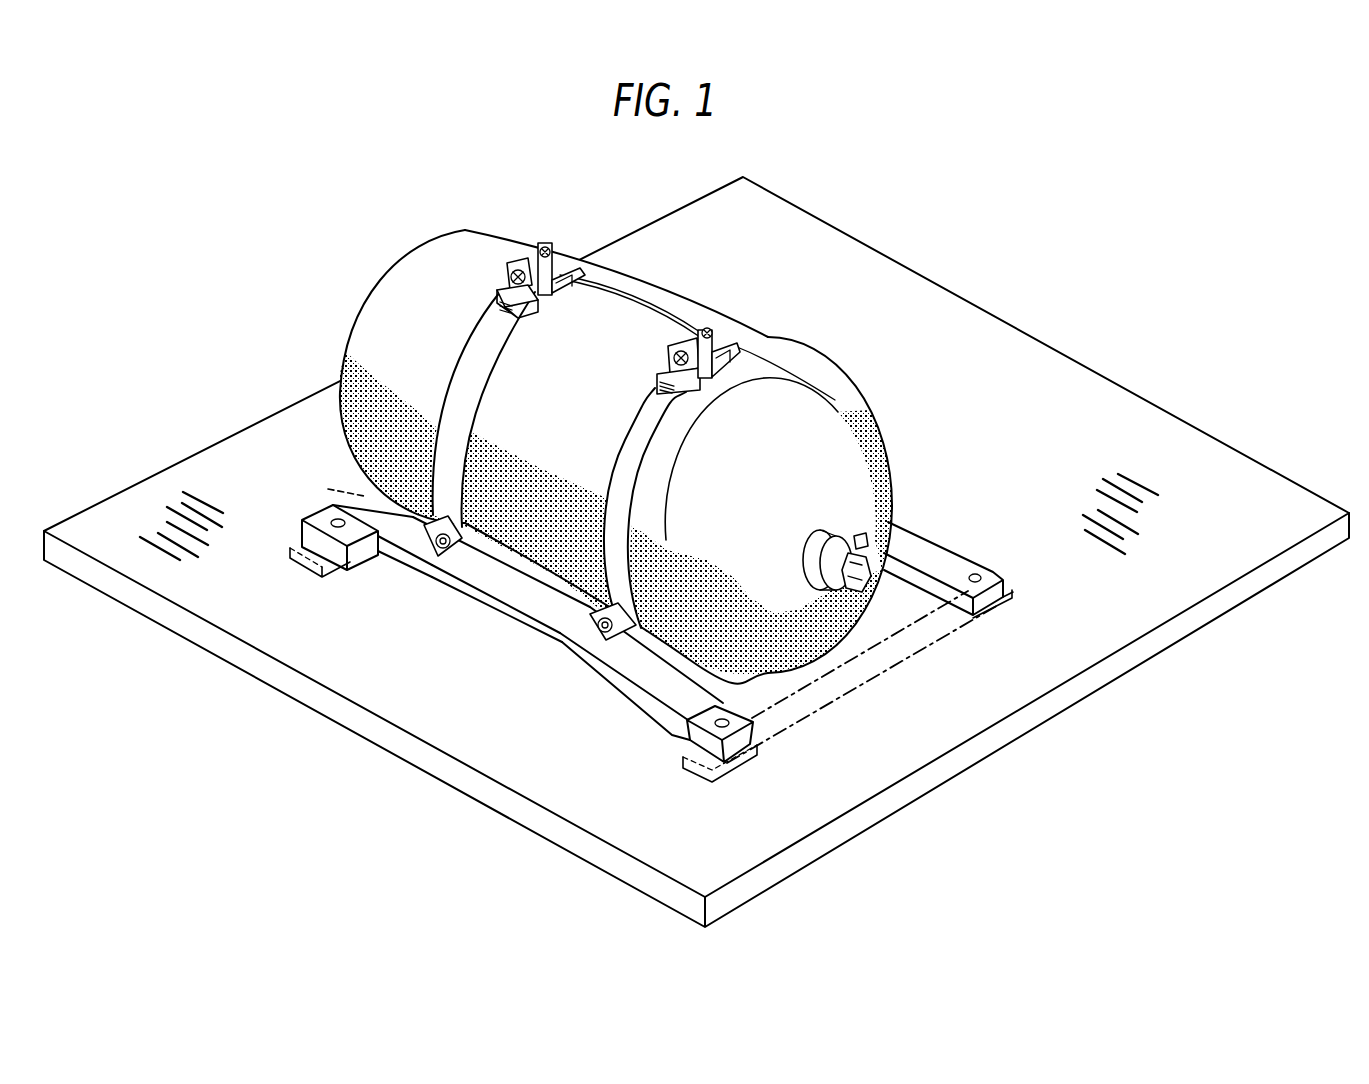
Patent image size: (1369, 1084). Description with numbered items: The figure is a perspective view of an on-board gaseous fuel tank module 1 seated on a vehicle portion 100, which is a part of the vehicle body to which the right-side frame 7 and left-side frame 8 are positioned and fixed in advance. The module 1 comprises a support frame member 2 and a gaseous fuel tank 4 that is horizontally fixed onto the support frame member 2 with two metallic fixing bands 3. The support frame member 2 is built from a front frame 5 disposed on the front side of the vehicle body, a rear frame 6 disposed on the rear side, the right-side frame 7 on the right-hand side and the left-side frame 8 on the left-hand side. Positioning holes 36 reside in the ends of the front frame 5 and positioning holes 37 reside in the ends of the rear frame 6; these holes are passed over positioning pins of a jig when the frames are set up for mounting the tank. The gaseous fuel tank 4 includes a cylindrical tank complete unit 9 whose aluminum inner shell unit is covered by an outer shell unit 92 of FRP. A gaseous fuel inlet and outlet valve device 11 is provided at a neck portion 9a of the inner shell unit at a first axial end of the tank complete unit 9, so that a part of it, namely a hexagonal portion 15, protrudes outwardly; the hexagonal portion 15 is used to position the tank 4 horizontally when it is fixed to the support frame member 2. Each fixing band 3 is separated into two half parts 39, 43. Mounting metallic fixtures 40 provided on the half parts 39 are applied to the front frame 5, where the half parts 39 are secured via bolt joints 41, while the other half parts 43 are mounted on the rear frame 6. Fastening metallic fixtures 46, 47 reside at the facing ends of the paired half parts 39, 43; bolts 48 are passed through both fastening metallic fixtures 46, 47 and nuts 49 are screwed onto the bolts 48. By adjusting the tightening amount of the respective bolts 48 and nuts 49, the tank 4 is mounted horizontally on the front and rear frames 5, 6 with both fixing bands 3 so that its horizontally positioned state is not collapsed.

The vehicle portion 100 is at (1168, 440).
The on-board gaseous fuel tank module 1 is at (898, 389).
The support frame member 2 is at (962, 545).
The metallic fixing band 3 is at (611, 263).
The gaseous fuel tank 4 is at (673, 300).
The front frame 5 is at (487, 621).
The rear frame 6 is at (918, 528).
The right-side frame 7 is at (332, 488).
The left-side frame 8 is at (881, 670).
The cylindrical tank complete unit 9 is at (880, 437).
The neck portion 9a is at (832, 546).
The gaseous fuel inlet and outlet valve device 11 is at (860, 536).
The hexagonal portion 15 is at (838, 568).
The positioning holes 36 is at (323, 515).
The positioning holes 37 is at (980, 576).
The half part 39 is at (458, 369).
The mounting metallic fixture 40 is at (410, 563).
The bolt joint 41 is at (432, 562).
The half part 43 is at (628, 277).
The fastening metallic fixture 46 is at (508, 262).
The fastening metallic fixture 47 is at (541, 243).
The bolt 48 is at (509, 277).
The nut 49 is at (549, 254).
The outer shell unit 92 is at (846, 404).